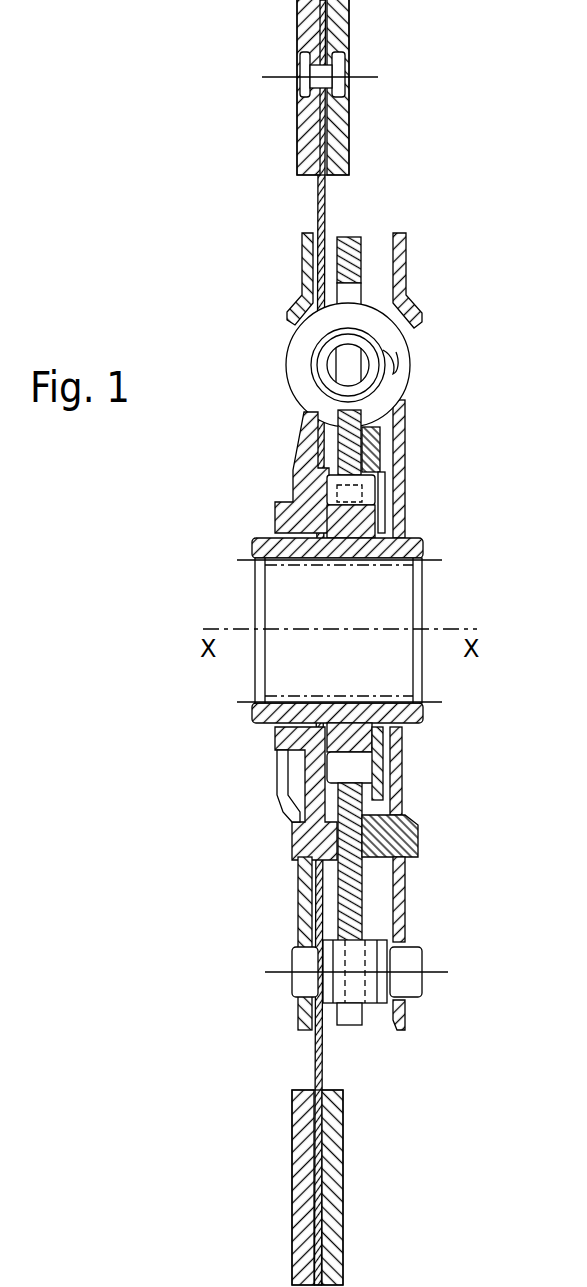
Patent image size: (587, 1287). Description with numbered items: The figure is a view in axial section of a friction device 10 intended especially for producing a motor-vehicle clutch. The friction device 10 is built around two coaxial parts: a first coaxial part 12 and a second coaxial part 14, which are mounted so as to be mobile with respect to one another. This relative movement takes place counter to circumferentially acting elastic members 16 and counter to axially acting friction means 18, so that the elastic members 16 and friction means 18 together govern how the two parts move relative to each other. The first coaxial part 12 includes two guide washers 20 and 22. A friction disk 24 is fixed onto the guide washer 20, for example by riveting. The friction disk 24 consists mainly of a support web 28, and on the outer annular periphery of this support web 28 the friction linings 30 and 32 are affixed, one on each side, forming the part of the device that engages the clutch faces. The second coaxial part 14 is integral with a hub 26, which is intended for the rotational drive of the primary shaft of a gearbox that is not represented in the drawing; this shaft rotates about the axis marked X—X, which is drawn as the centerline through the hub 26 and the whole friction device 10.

The friction device 10 is at (476, 207).
The first coaxial part 12 is at (436, 476).
The second coaxial part 14 is at (405, 438).
The circumferentially acting elastic members 16 is at (403, 375).
The axially acting friction means 18 is at (376, 884).
The guide washer 20 is at (295, 474).
The guide washer 22 is at (402, 486).
The friction disk 24 is at (327, 1043).
The hub 26 is at (362, 553).
The support web 28 is at (318, 890).
The friction lining 30 is at (298, 1205).
The friction lining 32 is at (333, 1195).